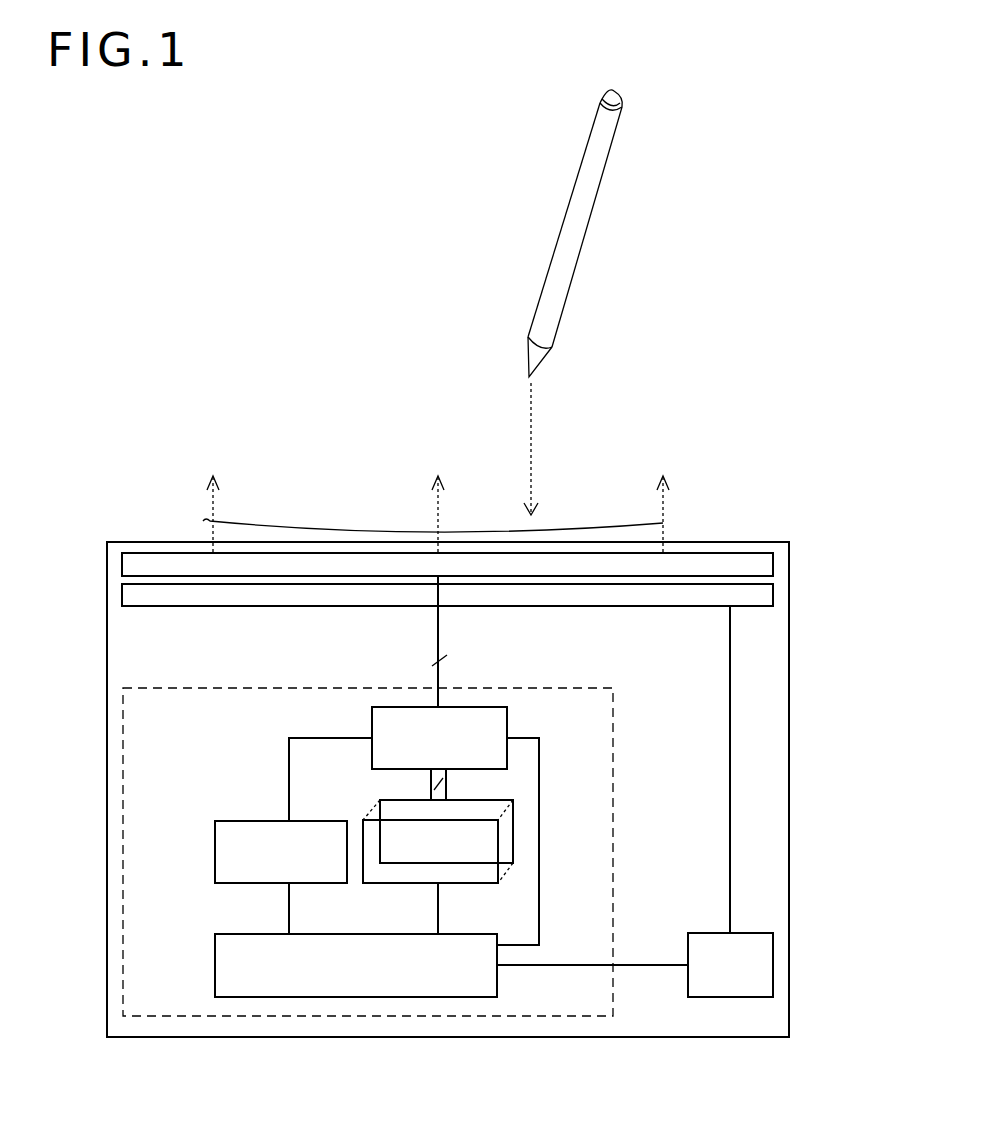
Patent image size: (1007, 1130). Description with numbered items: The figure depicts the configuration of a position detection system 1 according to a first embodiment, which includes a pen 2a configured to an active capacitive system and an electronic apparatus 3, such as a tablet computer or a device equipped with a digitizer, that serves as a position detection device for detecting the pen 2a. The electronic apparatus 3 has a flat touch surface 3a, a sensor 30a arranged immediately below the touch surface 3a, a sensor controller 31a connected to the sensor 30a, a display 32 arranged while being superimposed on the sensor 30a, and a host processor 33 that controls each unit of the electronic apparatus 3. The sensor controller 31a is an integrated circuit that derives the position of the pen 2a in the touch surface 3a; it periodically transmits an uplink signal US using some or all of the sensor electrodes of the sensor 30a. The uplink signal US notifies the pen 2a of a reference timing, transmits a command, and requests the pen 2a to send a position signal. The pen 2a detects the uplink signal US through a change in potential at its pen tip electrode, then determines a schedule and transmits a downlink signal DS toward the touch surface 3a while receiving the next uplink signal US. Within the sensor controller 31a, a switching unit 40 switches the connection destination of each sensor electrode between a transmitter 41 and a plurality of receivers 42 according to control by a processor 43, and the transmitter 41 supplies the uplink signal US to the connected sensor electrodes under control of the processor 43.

The position detection system 1 is at (258, 251).
The pen 2a is at (597, 187).
The electronic apparatus 3 is at (789, 790).
The touch surface 3a is at (158, 540).
The sensor 30a is at (180, 577).
The sensor controller 31a is at (613, 822).
The display 32 is at (662, 607).
The host processor 33 is at (714, 978).
The switching unit 40 is at (507, 720).
The transmitter 41 is at (214, 849).
The receivers 42 is at (513, 833).
The processor 43 is at (214, 963).
The downlink signal DS is at (533, 431).
The uplink signal US is at (665, 523).